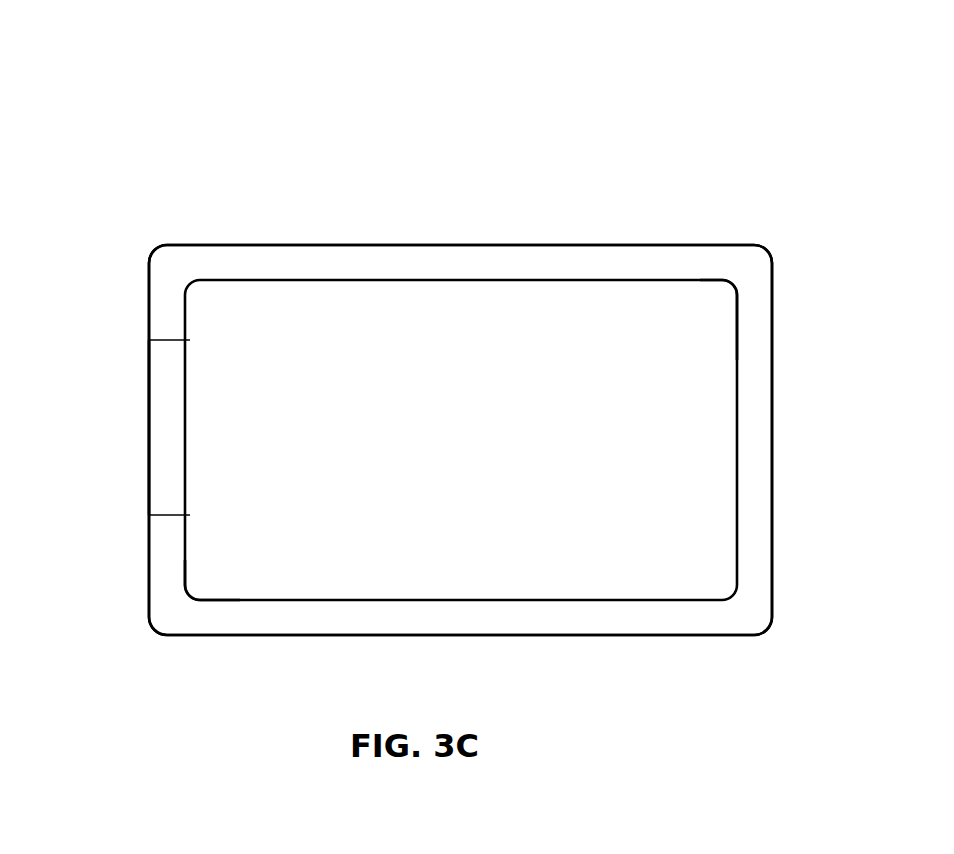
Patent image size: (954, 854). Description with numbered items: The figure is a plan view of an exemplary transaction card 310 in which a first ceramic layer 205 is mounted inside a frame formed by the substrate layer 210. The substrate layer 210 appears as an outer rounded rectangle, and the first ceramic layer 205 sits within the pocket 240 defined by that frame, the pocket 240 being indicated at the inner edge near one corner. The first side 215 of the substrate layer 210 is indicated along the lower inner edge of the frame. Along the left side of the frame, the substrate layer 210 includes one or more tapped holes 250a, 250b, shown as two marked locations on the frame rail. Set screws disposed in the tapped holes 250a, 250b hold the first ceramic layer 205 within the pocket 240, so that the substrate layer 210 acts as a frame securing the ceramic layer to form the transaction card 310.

The transaction card 310 is at (188, 162).
The substrate layer 210 is at (778, 437).
The first ceramic layer 205 is at (388, 312).
The pocket 240 is at (737, 357).
The first side 215 is at (209, 613).
The tapped hole 250a is at (168, 338).
The tapped hole 250b is at (171, 520).